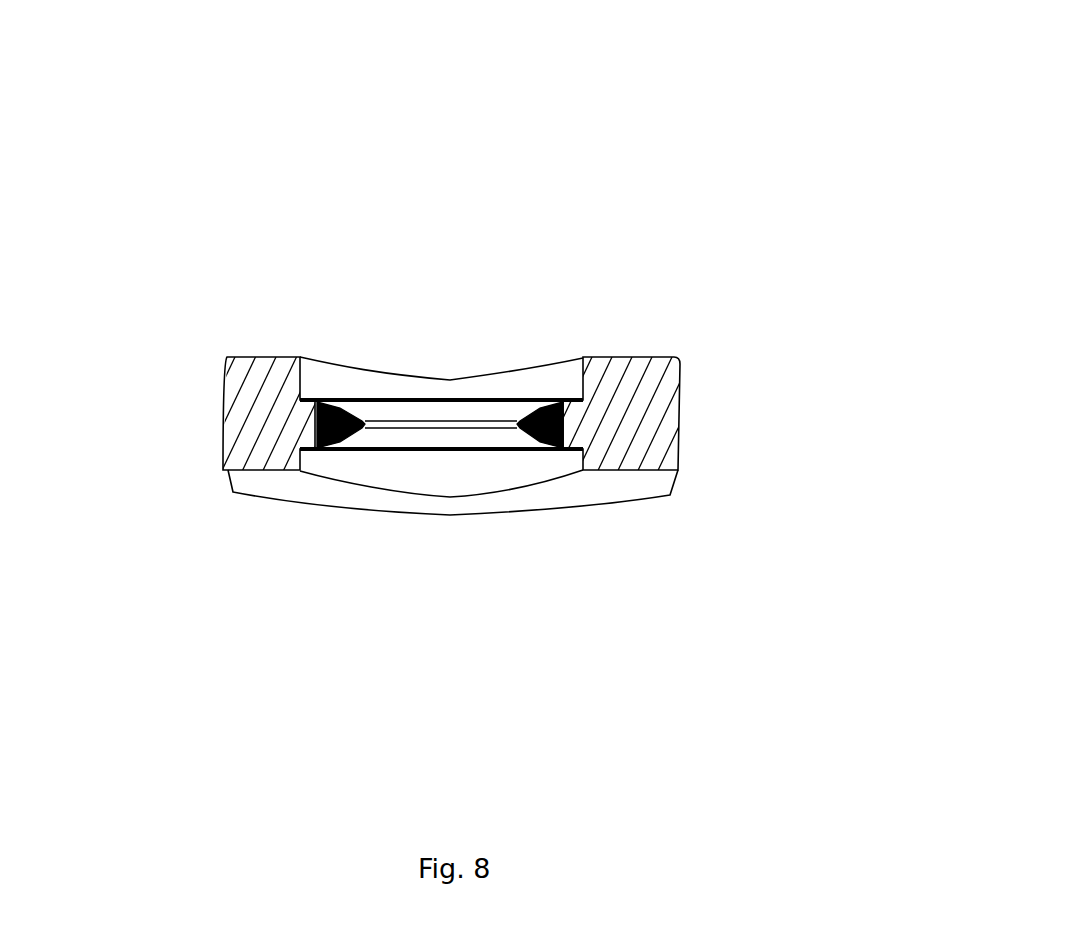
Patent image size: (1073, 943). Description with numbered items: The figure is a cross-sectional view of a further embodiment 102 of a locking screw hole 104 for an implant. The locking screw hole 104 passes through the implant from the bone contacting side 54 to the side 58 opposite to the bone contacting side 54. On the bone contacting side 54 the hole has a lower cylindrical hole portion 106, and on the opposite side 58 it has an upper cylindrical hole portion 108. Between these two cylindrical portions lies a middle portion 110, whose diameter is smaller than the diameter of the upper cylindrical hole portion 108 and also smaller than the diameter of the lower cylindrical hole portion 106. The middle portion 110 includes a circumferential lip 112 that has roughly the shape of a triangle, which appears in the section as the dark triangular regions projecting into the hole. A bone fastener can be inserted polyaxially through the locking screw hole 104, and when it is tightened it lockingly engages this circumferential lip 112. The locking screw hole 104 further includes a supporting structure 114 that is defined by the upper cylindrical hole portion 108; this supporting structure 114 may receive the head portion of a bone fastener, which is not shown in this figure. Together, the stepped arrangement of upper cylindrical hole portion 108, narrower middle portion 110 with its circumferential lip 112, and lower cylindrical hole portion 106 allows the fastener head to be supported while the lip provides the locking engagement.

The further embodiment 102 is at (879, 156).
The bone contacting side 54 is at (417, 545).
The side opposite to the bone contacting side 58 is at (265, 345).
The locking screw hole 104 is at (423, 295).
The lower cylindrical hole portion 106 is at (475, 544).
The upper cylindrical hole portion 108 is at (635, 340).
The middle portion 110 is at (633, 505).
The circumferential lip 112 is at (314, 538).
The supporting structure 114 is at (657, 366).